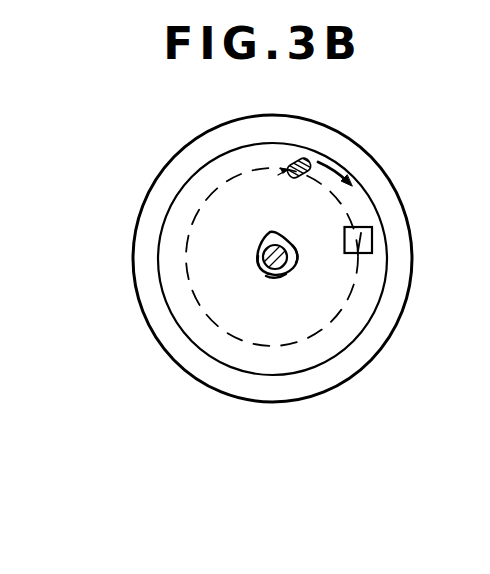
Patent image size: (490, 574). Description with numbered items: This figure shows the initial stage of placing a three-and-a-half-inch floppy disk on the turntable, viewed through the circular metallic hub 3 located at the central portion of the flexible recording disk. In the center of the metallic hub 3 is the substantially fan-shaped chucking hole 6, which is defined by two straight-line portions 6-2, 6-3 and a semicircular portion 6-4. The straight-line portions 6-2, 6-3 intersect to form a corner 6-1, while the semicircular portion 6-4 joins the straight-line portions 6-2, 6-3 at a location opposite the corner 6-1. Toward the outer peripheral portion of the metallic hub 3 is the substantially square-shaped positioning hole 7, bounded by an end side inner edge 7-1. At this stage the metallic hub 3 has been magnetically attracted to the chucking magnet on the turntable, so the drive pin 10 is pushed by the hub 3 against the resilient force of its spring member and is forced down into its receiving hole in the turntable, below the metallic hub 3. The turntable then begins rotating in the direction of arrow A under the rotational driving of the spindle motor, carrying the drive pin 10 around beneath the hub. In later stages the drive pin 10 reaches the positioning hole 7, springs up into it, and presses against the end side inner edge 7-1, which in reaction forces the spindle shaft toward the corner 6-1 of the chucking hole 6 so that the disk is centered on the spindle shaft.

The metallic hub 3 is at (372, 328).
The chucking hole 6 is at (257, 272).
The corner 6-1 is at (270, 232).
The straight-line portion 6-2 is at (256, 253).
The straight-line portion 6-3 is at (297, 250).
The semicircular portion 6-4 is at (277, 276).
The positioning hole 7 is at (367, 226).
The end side inner edge 7-1 is at (359, 255).
The drive pin 10 is at (307, 156).
The arrow A is at (362, 149).